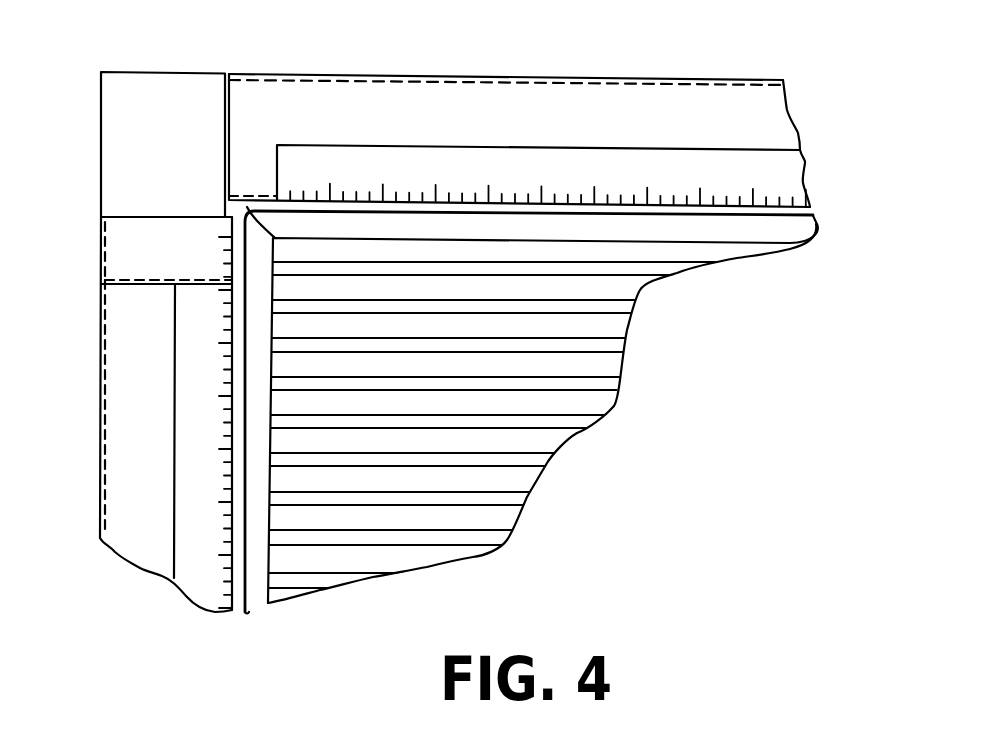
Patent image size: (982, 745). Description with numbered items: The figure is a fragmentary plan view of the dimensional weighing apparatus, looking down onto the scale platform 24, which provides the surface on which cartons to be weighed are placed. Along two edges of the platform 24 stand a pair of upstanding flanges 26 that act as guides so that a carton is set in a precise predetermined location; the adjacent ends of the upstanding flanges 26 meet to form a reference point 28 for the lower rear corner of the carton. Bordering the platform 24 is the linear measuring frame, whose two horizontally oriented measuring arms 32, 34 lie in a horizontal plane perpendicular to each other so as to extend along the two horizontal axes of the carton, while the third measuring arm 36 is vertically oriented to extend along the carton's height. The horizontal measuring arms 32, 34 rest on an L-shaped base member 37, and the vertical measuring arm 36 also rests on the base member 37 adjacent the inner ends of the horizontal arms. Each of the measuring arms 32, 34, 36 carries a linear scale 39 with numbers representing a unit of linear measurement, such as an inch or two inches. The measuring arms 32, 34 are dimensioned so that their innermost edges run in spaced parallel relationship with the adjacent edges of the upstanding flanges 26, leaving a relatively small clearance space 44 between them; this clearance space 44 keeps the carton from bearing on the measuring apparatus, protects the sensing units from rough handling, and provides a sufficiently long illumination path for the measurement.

The platform 24 is at (587, 405).
The upstanding flanges 26 is at (730, 233).
The reference point 28 is at (247, 207).
The measuring arm 32 is at (575, 78).
The measuring arm 34 is at (97, 435).
The measuring arm 36 is at (123, 215).
The L-shaped base member 37 is at (140, 72).
The linear scale 39 is at (457, 160).
The clearance space 44 is at (813, 213).